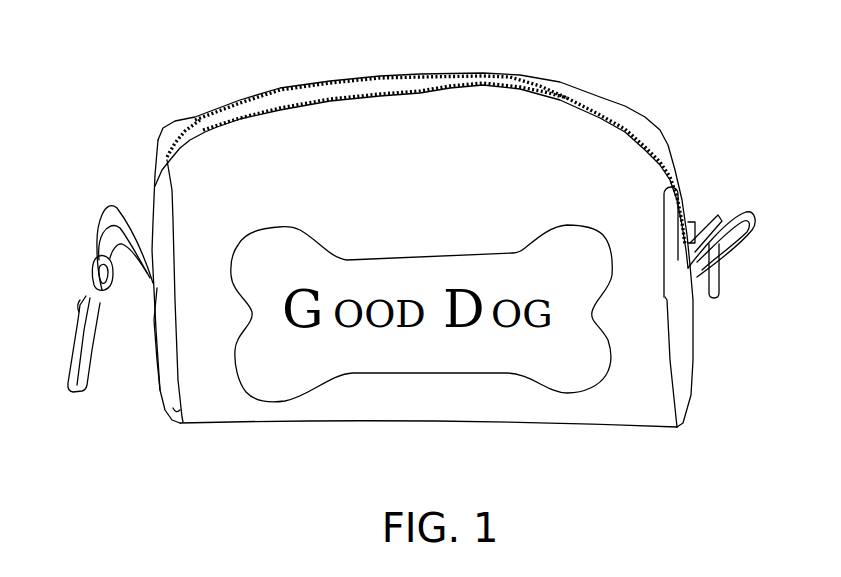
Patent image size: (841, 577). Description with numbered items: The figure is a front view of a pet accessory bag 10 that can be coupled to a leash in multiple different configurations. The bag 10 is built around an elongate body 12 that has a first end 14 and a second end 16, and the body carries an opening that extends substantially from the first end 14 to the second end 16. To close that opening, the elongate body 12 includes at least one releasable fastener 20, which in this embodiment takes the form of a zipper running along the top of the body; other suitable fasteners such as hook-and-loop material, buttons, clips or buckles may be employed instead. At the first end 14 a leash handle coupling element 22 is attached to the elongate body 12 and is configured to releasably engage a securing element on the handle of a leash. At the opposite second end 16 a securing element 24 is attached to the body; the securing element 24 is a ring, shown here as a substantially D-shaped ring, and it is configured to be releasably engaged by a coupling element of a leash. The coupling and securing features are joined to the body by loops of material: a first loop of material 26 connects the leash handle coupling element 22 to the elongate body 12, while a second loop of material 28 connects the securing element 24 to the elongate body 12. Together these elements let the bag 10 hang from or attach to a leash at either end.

The pet accessory bag 10 is at (508, 64).
The elongate body 12 is at (560, 147).
The first end 14 is at (157, 375).
The second end 16 is at (695, 360).
The releasable fastener 20 is at (715, 213).
The leash handle coupling element 22 is at (76, 322).
The securing element 24 is at (722, 288).
The first loop of material 26 is at (103, 223).
The second loop of material 28 is at (756, 223).